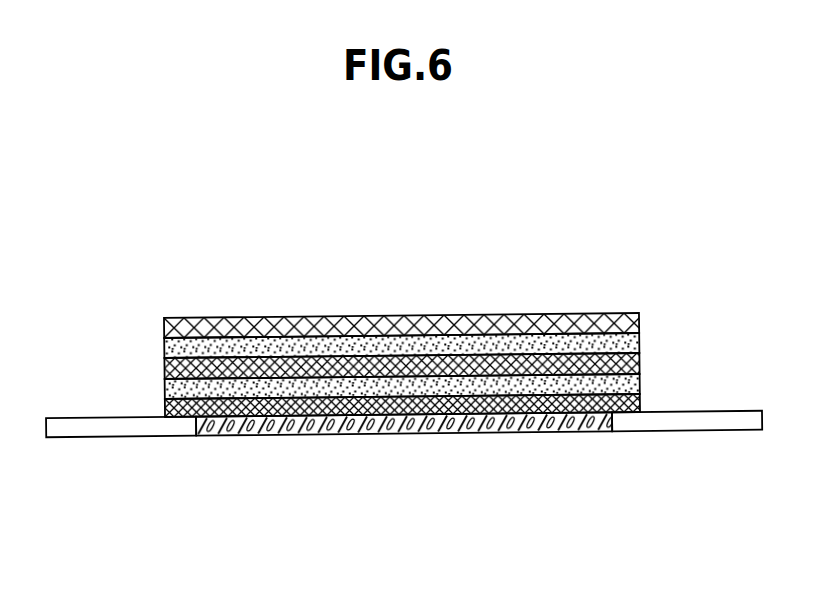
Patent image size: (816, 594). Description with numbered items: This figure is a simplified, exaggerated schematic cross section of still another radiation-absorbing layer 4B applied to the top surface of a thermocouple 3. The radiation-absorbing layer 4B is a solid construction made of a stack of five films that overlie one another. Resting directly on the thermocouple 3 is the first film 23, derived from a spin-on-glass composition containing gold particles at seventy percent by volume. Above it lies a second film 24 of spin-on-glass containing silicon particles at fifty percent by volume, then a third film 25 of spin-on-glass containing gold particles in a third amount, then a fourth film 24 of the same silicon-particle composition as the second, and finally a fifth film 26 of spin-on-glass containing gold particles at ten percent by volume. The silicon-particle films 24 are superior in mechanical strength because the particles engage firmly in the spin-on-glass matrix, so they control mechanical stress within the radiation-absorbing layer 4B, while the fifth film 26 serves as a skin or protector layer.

The thermocouple 3 is at (417, 450).
The radiation-absorbing layer 4B is at (145, 343).
The first film 23 is at (641, 404).
The second film 24 is at (641, 345).
The third film 25 is at (641, 366).
The fifth film 26 is at (641, 323).